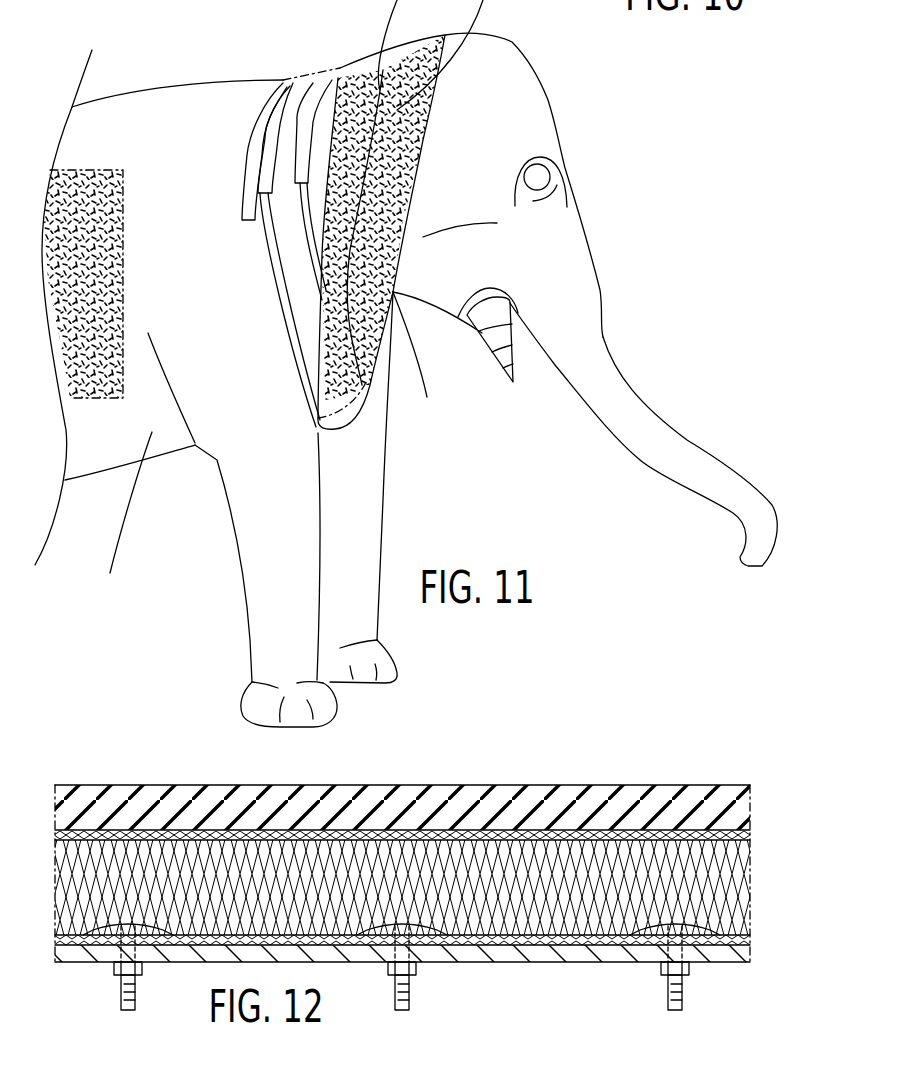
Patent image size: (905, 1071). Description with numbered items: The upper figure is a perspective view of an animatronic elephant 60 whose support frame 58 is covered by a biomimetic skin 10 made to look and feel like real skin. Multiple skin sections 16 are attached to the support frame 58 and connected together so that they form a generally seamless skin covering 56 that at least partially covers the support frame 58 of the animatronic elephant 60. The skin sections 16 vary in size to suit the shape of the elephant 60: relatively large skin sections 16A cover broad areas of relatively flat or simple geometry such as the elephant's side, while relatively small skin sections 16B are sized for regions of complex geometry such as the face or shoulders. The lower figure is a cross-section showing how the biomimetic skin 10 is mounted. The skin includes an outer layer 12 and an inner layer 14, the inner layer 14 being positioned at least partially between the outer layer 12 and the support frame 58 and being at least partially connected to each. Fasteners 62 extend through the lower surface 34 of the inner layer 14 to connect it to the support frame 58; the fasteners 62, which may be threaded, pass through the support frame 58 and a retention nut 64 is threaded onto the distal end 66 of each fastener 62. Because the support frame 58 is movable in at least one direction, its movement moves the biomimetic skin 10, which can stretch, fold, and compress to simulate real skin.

In FIG. 12, the biomimetic skin 10 is at (46, 784).
In FIG. 12, the outer layer 12 is at (695, 802).
In FIG. 12, the inner layer 14 is at (732, 888).
In FIG. 12, the lower surface 34 is at (62, 942).
In FIG. 11, the support frame 58 is at (308, 115).
In FIG. 12, the support frame 58 is at (718, 957).
In FIG. 12, the fasteners 62 is at (120, 989).
In FIG. 12, the retention nut 64 is at (418, 967).
In FIG. 12, the distal end 66 is at (401, 1010).
In FIG. 11, the skin sections 16 is at (397, 157).
In FIG. 11, the relatively large skin sections 16A is at (83, 220).
In FIG. 11, the relatively small skin sections 16B is at (350, 287).
In FIG. 11, the skin covering 56 is at (126, 519).
In FIG. 11, the animatronic figure 60 is at (641, 226).